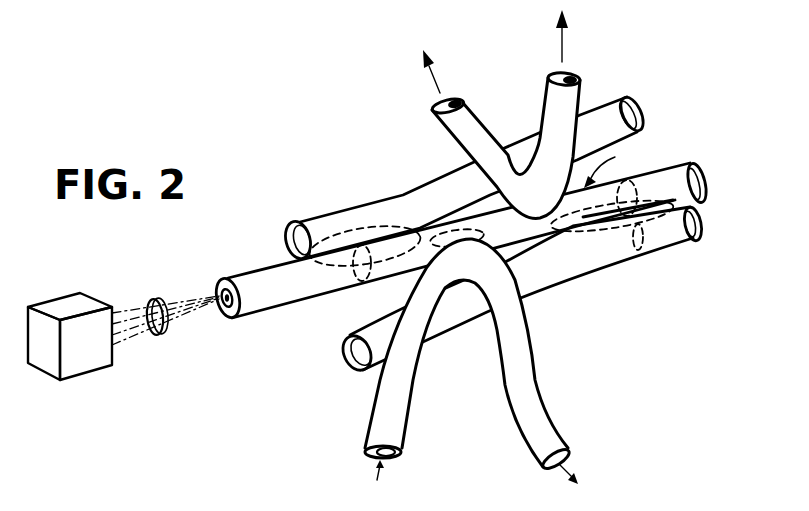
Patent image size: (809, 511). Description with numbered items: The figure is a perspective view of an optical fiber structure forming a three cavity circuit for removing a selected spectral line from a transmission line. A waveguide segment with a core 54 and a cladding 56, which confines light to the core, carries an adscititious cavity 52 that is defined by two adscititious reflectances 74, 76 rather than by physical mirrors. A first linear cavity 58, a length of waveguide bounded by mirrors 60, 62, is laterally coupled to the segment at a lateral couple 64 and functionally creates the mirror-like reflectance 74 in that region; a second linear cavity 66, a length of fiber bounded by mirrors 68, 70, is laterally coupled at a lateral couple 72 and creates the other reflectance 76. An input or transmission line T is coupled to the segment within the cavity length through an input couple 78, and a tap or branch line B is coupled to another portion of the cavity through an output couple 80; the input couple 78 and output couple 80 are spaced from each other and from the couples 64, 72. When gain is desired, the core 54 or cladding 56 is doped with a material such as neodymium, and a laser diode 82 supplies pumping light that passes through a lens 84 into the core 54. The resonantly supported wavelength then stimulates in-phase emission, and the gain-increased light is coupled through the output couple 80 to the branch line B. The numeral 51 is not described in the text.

The first optical fiber end 51 is at (698, 160).
The adscititious cavity 52 is at (612, 163).
The core 54 is at (221, 292).
The cladding 56 is at (228, 319).
The first linear cavity 58 is at (431, 182).
The mirror 60 is at (295, 222).
The mirror 62 is at (640, 105).
The lateral couple 64 is at (353, 226).
The second linear cavity 66 is at (527, 285).
The mirror 68 is at (345, 352).
The mirror 70 is at (700, 220).
The lateral couple 72 is at (643, 257).
The adscititious reflectance 74 is at (353, 281).
The adscititious reflectance 76 is at (647, 180).
The input couple 78 is at (463, 228).
The output couple 80 is at (563, 237).
The laser diode 82 is at (70, 377).
The lens 84 is at (157, 335).
The branch line B is at (474, 110).
The transmission line T is at (372, 403).